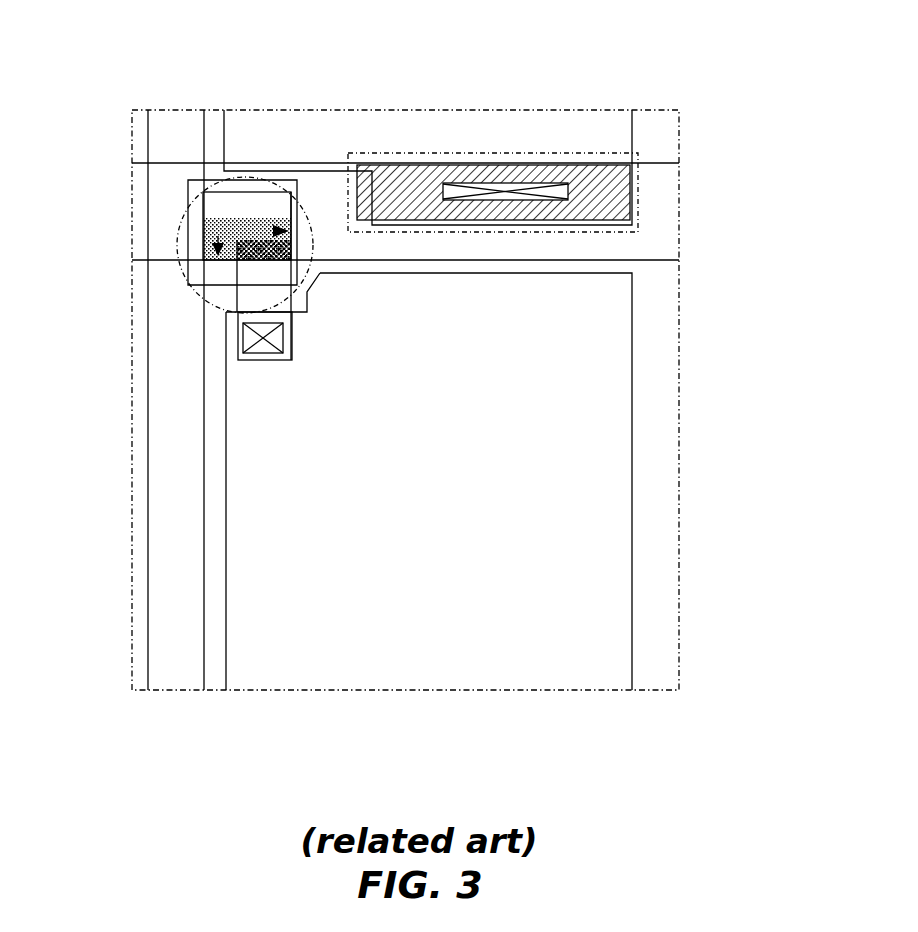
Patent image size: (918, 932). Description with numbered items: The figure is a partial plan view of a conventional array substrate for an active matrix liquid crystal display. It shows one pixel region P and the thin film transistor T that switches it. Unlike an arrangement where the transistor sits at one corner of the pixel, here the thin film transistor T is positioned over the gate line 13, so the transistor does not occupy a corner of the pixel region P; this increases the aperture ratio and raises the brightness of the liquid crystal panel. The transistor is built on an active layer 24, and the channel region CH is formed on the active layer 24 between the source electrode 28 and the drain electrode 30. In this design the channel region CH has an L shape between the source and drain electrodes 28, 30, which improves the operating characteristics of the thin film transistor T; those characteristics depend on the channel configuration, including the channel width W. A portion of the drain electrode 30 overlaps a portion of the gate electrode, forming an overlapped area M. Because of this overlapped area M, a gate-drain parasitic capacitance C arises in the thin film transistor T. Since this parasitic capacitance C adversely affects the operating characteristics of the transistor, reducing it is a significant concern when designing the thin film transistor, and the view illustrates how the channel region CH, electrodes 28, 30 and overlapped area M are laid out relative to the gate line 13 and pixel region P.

The gate line 13 is at (658, 208).
The thin film transistor T is at (297, 180).
The source electrode 28 is at (237, 200).
The channel region CH is at (203, 227).
The active layer 24 is at (298, 240).
The channel width W is at (218, 240).
The overlapped area M is at (278, 262).
The pixel region P is at (650, 414).
The drain electrode 30 is at (237, 350).
The parasitic capacitance C is at (470, 153).